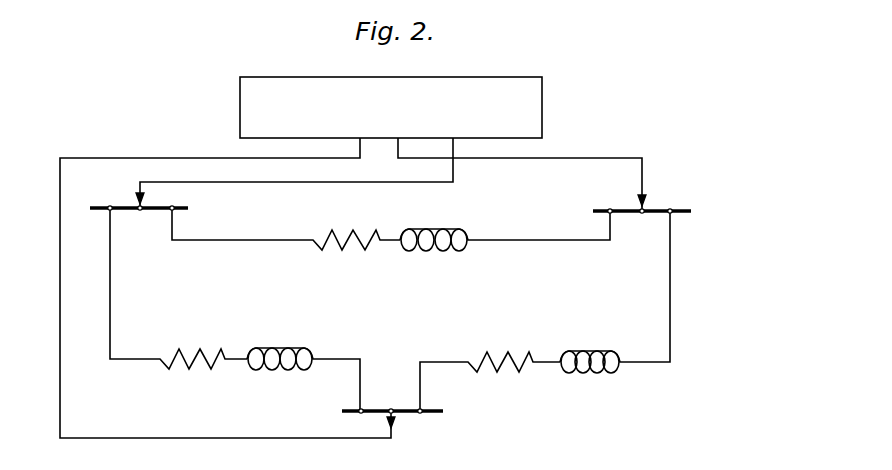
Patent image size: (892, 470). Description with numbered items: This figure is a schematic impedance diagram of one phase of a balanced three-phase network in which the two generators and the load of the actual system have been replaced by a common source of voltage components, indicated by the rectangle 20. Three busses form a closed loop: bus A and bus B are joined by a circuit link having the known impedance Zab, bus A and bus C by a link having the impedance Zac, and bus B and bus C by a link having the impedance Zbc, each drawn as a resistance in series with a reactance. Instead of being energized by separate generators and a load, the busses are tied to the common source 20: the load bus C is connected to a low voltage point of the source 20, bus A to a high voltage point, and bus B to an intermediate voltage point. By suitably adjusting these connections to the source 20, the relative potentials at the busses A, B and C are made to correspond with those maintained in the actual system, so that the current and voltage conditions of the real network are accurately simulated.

The common source of voltage components 20 is at (542, 110).
The bus A is at (172, 208).
The bus B is at (674, 211).
The bus C is at (426, 411).
The impedance of circuit link between busses A and B Zab is at (391, 244).
The impedance of circuit link between busses A and C Zac is at (235, 309).
The impedance of circuit link between busses B and C Zbc is at (545, 311).